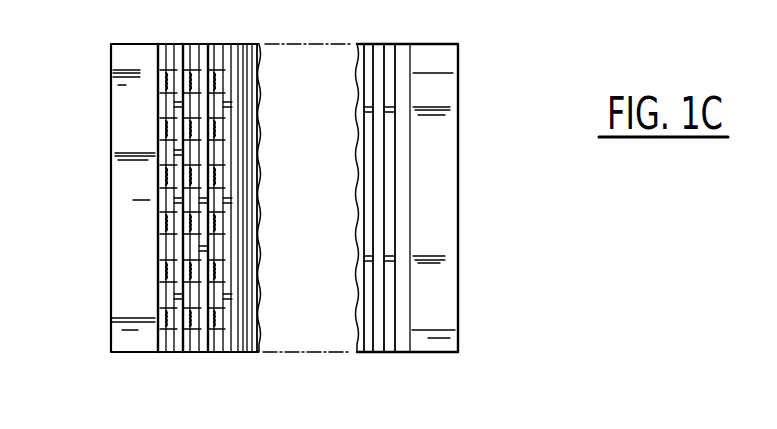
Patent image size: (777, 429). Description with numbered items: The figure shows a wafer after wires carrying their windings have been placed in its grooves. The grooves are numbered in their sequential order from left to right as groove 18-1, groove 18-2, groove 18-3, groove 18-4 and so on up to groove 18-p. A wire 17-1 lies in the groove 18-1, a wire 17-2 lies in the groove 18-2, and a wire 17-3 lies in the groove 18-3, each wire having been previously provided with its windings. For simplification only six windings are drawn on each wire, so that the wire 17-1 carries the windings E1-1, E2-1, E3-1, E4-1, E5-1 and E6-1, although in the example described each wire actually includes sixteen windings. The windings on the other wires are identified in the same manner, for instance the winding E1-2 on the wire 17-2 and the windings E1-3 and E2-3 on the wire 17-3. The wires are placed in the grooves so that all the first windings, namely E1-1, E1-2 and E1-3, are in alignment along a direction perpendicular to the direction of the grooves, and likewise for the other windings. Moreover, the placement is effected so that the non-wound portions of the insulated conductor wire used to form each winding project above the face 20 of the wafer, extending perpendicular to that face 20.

The groove 18-1 is at (168, 44).
The groove 18-2 is at (200, 44).
The groove 18-3 is at (217, 44).
The groove 18-4 is at (242, 46).
The groove 18-p is at (403, 52).
The wire 17-1 is at (162, 340).
The wire 17-2 is at (188, 342).
The wire 17-3 is at (236, 338).
The winding E6-1 is at (165, 88).
The winding E5-1 is at (165, 133).
The winding E4-1 is at (165, 183).
The winding E3-1 is at (165, 229).
The winding E2-1 is at (165, 275).
The winding E1-1 is at (165, 315).
The winding E1-2 is at (205, 345).
The winding E2-3 is at (220, 271).
The winding E1-3 is at (220, 316).
The face of the wafer 20 is at (458, 133).